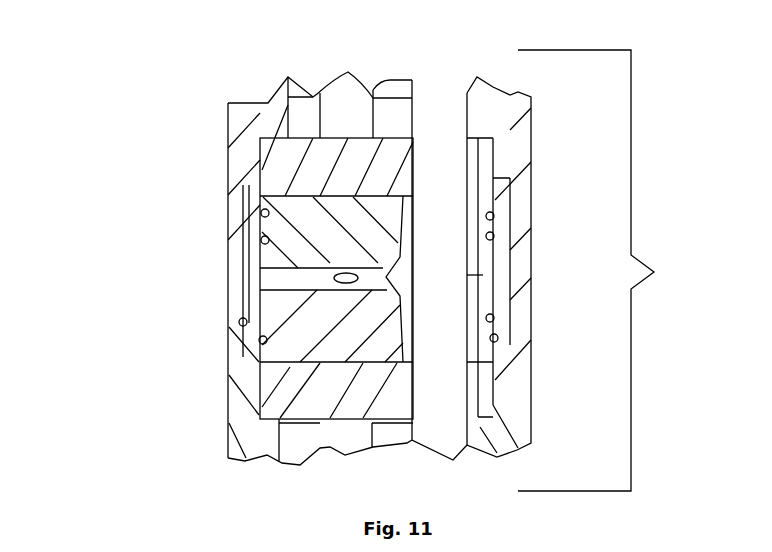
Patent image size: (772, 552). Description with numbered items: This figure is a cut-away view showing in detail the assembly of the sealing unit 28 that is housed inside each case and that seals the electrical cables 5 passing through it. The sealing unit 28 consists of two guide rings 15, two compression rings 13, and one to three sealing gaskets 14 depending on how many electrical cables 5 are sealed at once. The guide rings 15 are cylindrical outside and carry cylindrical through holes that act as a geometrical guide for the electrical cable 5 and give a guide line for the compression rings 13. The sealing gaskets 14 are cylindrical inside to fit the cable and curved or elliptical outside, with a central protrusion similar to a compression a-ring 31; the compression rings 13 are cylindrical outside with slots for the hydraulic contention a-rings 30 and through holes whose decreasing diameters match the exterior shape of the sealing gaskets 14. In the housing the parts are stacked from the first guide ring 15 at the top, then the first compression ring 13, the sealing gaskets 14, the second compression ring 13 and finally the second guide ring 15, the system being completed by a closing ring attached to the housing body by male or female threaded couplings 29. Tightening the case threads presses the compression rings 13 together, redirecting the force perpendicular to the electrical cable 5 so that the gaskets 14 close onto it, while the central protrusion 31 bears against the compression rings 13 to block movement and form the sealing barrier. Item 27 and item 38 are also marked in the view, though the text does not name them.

The electrical cable 5 is at (443, 122).
The compression ring 13 is at (305, 327).
The sealing gasket 14 is at (467, 217).
The guide ring 15 is at (297, 397).
The plate 27 is at (285, 273).
The sealing unit 28 is at (602, 270).
The threaded coupling 29 is at (497, 252).
The hydraulic contention a-ring 30 is at (498, 340).
The compression a-ring central protrusion 31 is at (483, 275).
The upper fasteners 38 is at (494, 236).